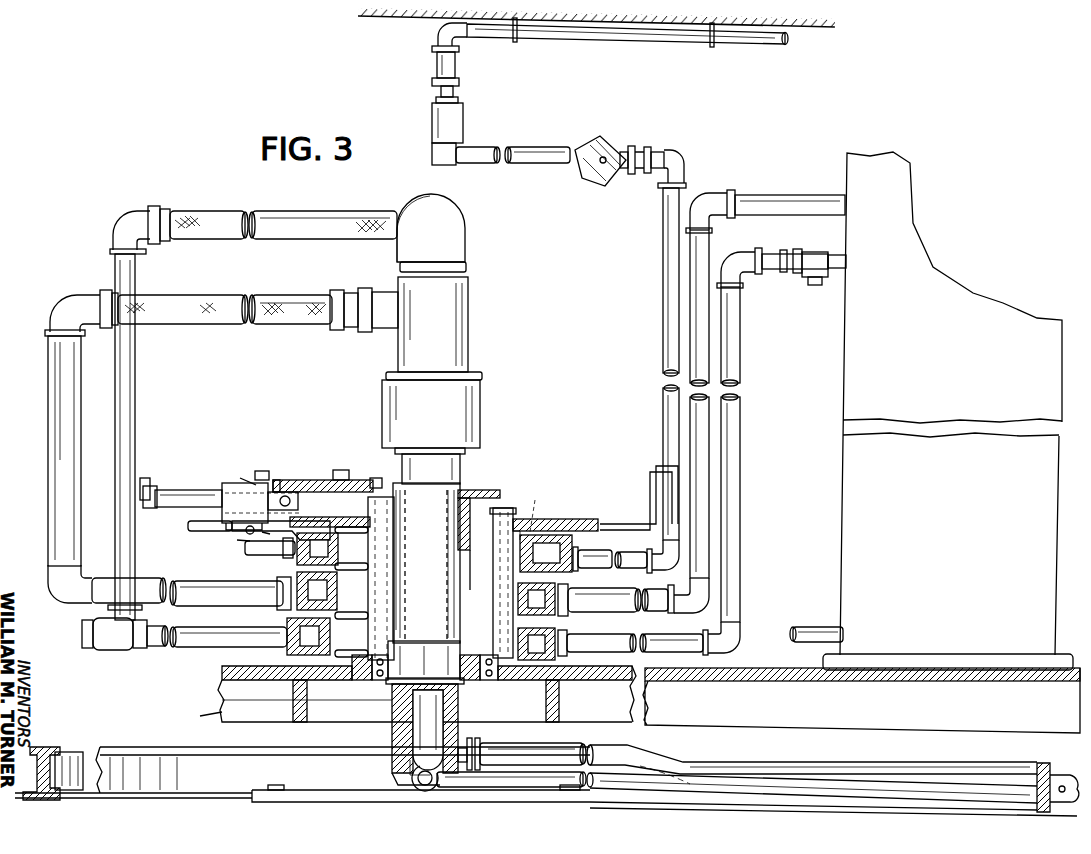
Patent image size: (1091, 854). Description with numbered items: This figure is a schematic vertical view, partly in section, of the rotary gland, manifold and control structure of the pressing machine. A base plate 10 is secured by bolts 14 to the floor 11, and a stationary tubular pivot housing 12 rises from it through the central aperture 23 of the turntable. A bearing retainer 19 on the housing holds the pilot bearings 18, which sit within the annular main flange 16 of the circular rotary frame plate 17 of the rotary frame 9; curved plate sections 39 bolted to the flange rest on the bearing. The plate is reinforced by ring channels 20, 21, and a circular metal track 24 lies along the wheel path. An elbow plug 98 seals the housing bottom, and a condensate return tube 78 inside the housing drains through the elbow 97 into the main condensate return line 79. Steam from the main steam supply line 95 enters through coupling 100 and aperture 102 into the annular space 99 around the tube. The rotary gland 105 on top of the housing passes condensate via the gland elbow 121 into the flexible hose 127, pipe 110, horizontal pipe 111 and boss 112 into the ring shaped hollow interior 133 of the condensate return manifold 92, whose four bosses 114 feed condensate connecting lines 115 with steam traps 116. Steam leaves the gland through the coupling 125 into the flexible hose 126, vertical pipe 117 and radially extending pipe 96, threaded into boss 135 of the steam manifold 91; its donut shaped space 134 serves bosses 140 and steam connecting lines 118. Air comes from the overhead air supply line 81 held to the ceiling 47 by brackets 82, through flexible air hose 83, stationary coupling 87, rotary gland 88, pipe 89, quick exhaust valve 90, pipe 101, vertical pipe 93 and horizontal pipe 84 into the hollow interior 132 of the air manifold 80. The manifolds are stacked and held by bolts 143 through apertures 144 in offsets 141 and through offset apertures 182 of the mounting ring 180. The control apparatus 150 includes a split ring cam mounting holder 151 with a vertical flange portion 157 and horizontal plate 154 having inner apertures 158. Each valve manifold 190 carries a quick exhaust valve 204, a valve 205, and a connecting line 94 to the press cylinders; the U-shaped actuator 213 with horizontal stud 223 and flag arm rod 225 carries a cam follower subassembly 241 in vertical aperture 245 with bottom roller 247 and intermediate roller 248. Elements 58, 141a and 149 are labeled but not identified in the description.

The rotary frame 9 is at (203, 717).
The base plate 10 is at (350, 795).
The floor 11 is at (222, 793).
The stationary tubular pivot housing 12 is at (445, 710).
The bolts 14 is at (372, 680).
The annular main flange 16 is at (358, 680).
The circular rotary frame plate 17 is at (222, 672).
The pilot bearings 18 is at (374, 682).
The bearing retainer 19 is at (462, 682).
The outer ring channel 20 is at (620, 716).
The inner ring channel 21 is at (293, 692).
The central aperture 23 is at (468, 690).
The circular metal track 24 is at (45, 748).
The curved plate sections 39 is at (386, 640).
The ceiling 47 is at (792, 28).
The valve body 58 is at (232, 482).
The condensate return tube 78 is at (416, 742).
The main condensate return line 79 is at (823, 780).
The air manifold 80 is at (548, 534).
The overhead air supply line 81 is at (628, 36).
The brackets 82 is at (518, 40).
The flexible air hose 83 is at (459, 63).
The horizontal pipe 84 is at (598, 560).
The stationary coupling 87 is at (458, 103).
The rotary gland 88 is at (440, 124).
The rigid horizontally extending pipe 89 is at (523, 156).
The quick exhaust valve 90 is at (614, 155).
The steam manifold 91 is at (518, 602).
The condensate return manifold 92 is at (286, 624).
The vertical pipe 93 is at (676, 166).
The connecting line 94 is at (806, 627).
The main steam supply line 95 is at (690, 762).
The radially extending pipe 96 is at (226, 598).
The elbow 97 is at (450, 778).
The elbow plug 98 is at (410, 780).
The annular space 99 is at (470, 740).
The coupling 100 is at (480, 745).
The pipe 101 is at (632, 150).
The aperture 102 is at (533, 753).
The rotary gland 105 is at (485, 348).
The vertically extending pipe 110 is at (132, 420).
The horizontal pipe 111 is at (180, 631).
The boss 112 is at (480, 415).
The internally threaded bosses 114 is at (560, 680).
The condensate connecting line 115 is at (838, 258).
The steam trap 116 is at (806, 282).
The vertical pipe 117 is at (52, 412).
The steam connecting line 118 is at (670, 428).
The gland elbow 121 is at (456, 222).
The radially extending coupling 125 is at (360, 332).
The flexible hose 126 is at (243, 312).
The flexible hose 127 is at (308, 232).
The hollow interior 132 is at (606, 522).
The ring shaped hollow interior 133 is at (318, 642).
The donut shaped space 134 is at (324, 598).
The internally threaded boss 135 is at (297, 560).
The internally threaded bosses 140 is at (568, 612).
The offsets 141 is at (370, 560).
The bracket 141a is at (540, 498).
The bolts 143 is at (508, 512).
The apertures 144 is at (396, 570).
The bolt 149 is at (343, 465).
The control apparatus 150 is at (224, 480).
The split ring cam mounting holder 151 is at (484, 492).
The horizontal plate 154 is at (372, 498).
The vertical flange portion 157 is at (395, 512).
The inner apertures 158 is at (378, 478).
The mounting ring 180 is at (590, 522).
The offset apertures 182 is at (543, 515).
The valve manifold 190 is at (240, 541).
The quick exhaust valve 204 is at (262, 535).
The valve 205 is at (195, 531).
The U-shaped actuator 213 is at (215, 492).
The horizontal stud 223 is at (178, 504).
The flag arm rod 225 is at (152, 478).
The cam follower subassembly 241 is at (248, 478).
The vertical aperture 245 is at (260, 470).
The bottom roller 247 is at (277, 480).
The intermediate roller 248 is at (290, 490).